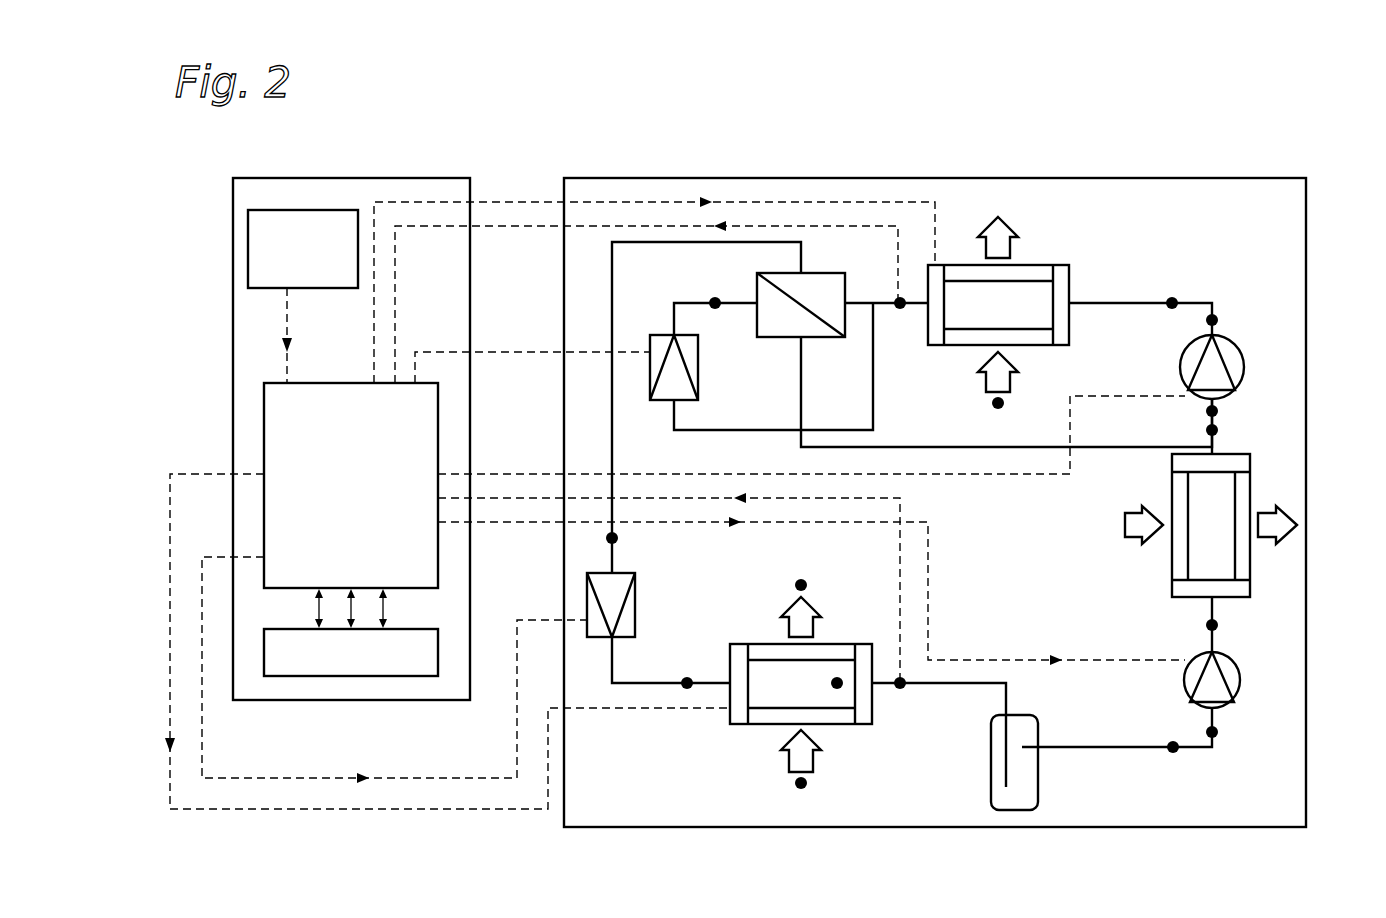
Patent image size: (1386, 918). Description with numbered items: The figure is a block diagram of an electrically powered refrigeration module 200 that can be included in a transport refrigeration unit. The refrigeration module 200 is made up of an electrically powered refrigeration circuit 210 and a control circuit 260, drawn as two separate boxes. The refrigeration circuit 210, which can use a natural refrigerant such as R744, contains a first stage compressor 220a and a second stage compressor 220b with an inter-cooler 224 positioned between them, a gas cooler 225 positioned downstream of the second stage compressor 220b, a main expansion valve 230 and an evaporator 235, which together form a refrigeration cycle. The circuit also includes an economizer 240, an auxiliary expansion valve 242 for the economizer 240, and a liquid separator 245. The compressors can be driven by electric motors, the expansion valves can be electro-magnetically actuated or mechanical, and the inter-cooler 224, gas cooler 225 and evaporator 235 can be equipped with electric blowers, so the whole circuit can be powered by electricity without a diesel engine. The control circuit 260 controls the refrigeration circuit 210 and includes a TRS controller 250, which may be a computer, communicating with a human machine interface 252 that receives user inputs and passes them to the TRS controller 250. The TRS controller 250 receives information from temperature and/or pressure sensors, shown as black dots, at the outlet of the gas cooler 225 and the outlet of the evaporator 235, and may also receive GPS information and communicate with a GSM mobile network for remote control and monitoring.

The electrically powered refrigeration module 200 is at (1203, 146).
The electrically powered refrigeration circuit 210 is at (1238, 178).
The first stage compressor 220a is at (1240, 666).
The second stage compressor 220b is at (1242, 350).
The inter-cooler 224 is at (1245, 454).
The gas cooler 225 is at (1033, 265).
The main expansion valve 230 is at (587, 596).
The evaporator 235 is at (760, 724).
The economizer 240 is at (825, 273).
The auxiliary expansion valve 242 is at (658, 335).
The liquid separator 245 is at (1018, 810).
The TRS controller 250 is at (264, 410).
The human machine interface 252 is at (313, 676).
The control circuit 260 is at (380, 178).